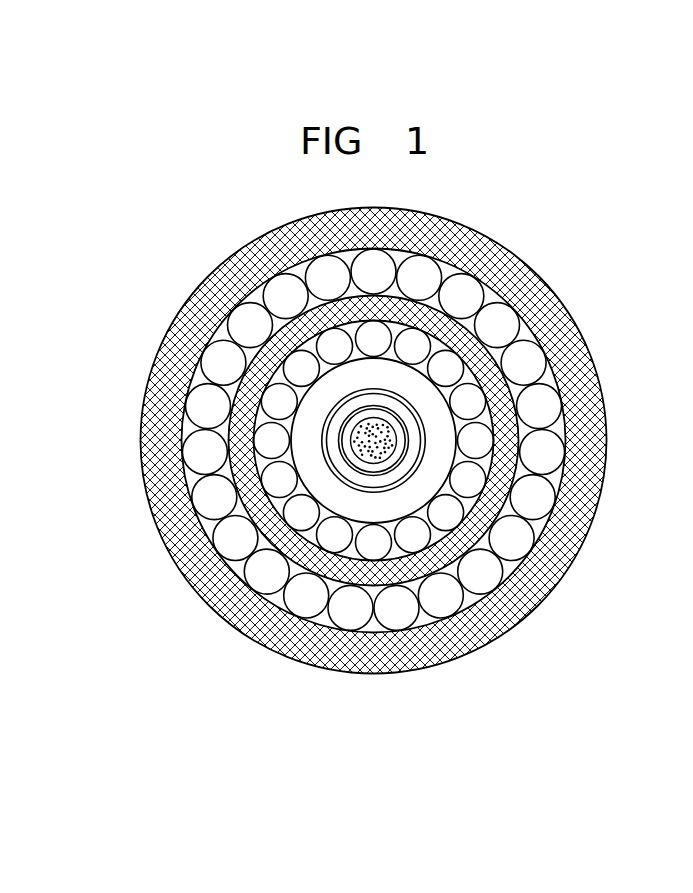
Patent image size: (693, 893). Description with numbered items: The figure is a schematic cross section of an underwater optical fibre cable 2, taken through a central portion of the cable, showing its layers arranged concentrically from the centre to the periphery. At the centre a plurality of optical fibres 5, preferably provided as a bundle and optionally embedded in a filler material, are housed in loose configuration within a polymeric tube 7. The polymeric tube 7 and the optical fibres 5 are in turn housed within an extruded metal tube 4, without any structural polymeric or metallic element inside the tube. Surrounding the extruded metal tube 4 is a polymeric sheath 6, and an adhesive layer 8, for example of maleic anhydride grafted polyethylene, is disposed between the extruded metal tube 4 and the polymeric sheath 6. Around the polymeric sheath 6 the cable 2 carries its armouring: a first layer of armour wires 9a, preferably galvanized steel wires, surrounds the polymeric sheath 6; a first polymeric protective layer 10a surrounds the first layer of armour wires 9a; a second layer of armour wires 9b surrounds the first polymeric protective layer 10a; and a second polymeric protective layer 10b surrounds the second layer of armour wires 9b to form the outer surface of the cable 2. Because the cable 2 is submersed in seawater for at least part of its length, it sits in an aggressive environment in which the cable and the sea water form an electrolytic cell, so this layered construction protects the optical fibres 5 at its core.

The underwater optical fibre cable 2 is at (150, 231).
The optical fibres 5 is at (381, 421).
The polymeric tube 7 is at (400, 410).
The extruded metal tube 4 is at (412, 432).
The adhesive layer 8 is at (421, 435).
The polymeric sheath 6 is at (427, 462).
The first layer of armour wires 9a is at (445, 512).
The first polymeric protective layer 10a is at (473, 556).
The second layer of armour wires 9b is at (442, 598).
The second polymeric protective layer 10b is at (420, 653).